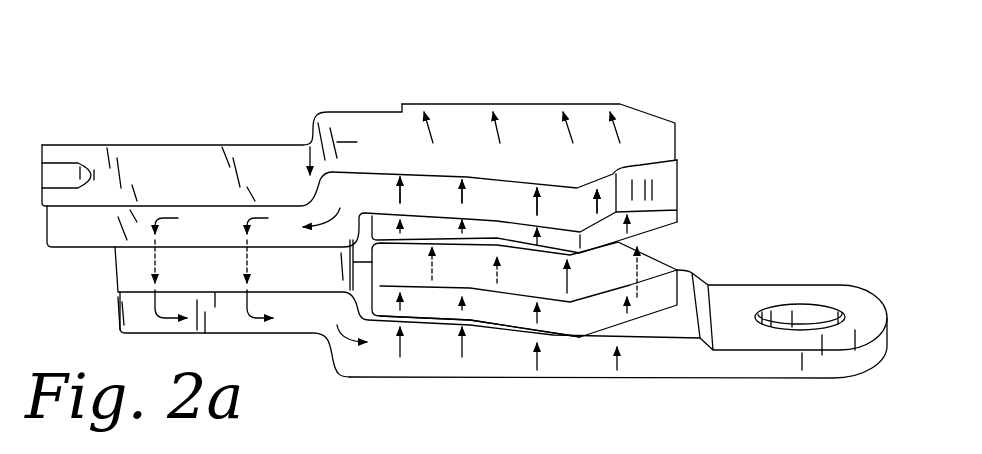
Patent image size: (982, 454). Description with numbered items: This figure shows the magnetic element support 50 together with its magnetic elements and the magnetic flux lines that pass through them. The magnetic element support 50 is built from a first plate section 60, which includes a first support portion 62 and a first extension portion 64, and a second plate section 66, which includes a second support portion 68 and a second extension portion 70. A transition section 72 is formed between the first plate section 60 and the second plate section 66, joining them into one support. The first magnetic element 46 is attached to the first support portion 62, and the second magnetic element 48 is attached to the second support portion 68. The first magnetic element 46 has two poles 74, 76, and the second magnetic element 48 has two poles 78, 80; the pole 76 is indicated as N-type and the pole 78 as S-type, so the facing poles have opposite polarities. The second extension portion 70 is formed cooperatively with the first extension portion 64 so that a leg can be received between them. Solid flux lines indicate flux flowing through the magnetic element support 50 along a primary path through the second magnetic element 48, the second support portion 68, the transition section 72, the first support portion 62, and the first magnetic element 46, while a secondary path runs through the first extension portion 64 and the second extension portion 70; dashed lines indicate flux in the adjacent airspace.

The magnetic element support 50 is at (223, 82).
The second extension portion 70 is at (173, 153).
The transition section 72 is at (502, 105).
The second support portion 68 is at (540, 143).
The second plate section 66 is at (590, 143).
The pole 78 is at (487, 222).
The pole 80 is at (490, 238).
The second magnetic element 48 is at (657, 225).
The pole 74 is at (507, 317).
The pole 76 is at (487, 300).
The first magnetic element 46 is at (597, 320).
The first extension portion 64 is at (147, 333).
The first plate section 60 is at (692, 367).
The first support portion 62 is at (752, 380).